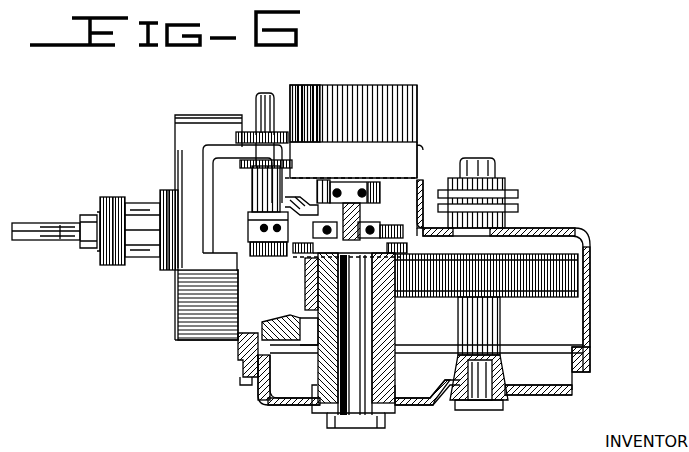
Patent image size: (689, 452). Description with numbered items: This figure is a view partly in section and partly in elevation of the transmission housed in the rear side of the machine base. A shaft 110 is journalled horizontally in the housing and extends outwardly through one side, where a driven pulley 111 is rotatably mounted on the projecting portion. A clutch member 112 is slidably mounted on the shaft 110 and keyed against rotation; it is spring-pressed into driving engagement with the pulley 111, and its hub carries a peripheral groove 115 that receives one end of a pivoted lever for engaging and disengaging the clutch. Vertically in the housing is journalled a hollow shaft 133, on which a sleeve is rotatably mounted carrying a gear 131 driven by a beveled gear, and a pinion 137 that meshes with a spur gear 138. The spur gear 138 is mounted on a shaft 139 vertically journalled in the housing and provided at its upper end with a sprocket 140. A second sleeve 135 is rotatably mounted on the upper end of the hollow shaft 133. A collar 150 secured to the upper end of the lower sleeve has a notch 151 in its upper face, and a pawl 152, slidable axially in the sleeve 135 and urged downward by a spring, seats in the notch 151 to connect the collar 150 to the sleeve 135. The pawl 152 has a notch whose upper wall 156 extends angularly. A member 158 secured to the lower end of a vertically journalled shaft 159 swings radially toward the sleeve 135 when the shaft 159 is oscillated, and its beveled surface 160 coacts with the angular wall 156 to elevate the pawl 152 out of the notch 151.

The shaft 110 is at (72, 242).
The driven pulley 111 is at (190, 227).
The clutch member 112 is at (172, 278).
The peripheral groove 115 is at (134, 200).
The gear 131 is at (274, 320).
The hollow shaft 133 is at (345, 428).
The second sleeve 135 is at (380, 188).
The pinion 137 is at (304, 270).
The spur gear 138 is at (538, 246).
The shaft 139 is at (495, 333).
The sprocket 140 is at (507, 198).
The collar 150 is at (408, 247).
The notch 151 is at (296, 256).
The pawl 152 is at (347, 212).
The upper wall 156 is at (301, 198).
The member 158 is at (250, 214).
The shaft 159 is at (255, 106).
The beveled surface 160 is at (252, 194).